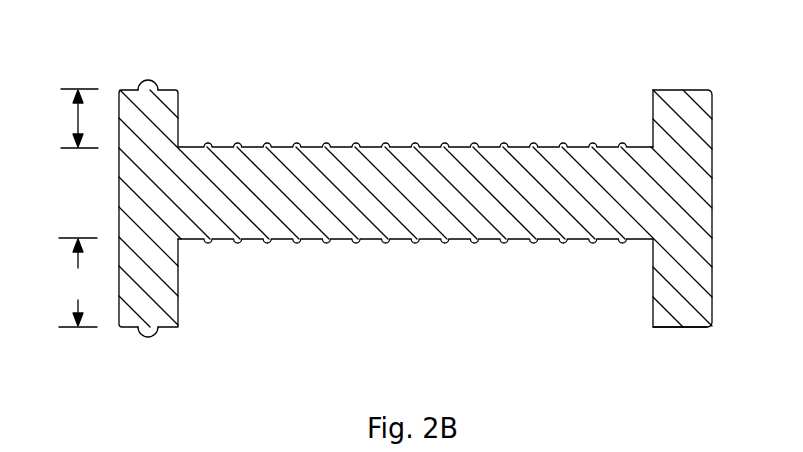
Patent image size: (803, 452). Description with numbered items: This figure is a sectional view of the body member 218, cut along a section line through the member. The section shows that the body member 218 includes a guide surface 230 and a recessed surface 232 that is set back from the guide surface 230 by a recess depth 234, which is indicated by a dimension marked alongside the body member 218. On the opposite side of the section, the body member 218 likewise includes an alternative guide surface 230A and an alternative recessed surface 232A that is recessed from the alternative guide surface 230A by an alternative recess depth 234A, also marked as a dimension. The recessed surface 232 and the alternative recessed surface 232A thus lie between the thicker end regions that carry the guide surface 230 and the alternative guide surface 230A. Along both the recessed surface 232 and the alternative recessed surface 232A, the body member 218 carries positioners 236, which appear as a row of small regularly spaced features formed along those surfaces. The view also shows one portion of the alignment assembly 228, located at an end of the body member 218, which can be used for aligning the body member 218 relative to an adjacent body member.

The body member 218 is at (707, 75).
The alignment assembly 228 is at (136, 79).
The guide surface 230 is at (663, 90).
The alternative guide surface 230A is at (693, 327).
The recessed surface 232 is at (570, 146).
The alternative recessed surface 232A is at (520, 242).
The recess depth 234 is at (77, 120).
The alternative recess depth 234A is at (79, 282).
The positioners 236 is at (324, 146).